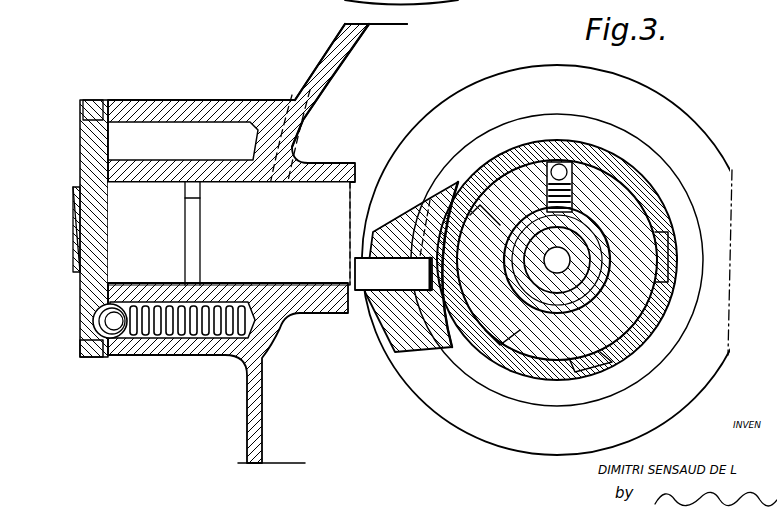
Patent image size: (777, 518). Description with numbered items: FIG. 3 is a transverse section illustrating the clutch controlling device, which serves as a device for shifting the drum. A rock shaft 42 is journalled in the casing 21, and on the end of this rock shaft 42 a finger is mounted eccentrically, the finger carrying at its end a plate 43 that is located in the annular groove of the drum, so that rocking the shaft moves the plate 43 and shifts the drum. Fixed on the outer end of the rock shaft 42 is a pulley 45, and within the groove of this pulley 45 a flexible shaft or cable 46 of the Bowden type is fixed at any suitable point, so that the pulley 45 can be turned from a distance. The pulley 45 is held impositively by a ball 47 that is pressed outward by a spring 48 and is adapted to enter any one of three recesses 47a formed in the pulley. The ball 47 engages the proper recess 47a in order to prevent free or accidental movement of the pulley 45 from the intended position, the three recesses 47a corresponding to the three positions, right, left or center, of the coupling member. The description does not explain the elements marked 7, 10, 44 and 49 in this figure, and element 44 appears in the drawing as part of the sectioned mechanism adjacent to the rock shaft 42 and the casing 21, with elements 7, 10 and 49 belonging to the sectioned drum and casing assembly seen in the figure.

The shaft bearing hub 7 is at (578, 290).
The rotor 10 is at (648, 195).
The casing 21 is at (330, 67).
The rock shaft 42 is at (415, 272).
The plate 43 is at (432, 197).
The piston 44 is at (302, 278).
The pulley 45 is at (140, 101).
The flexible shaft or cable 46 is at (88, 358).
The ball 47 is at (119, 340).
The recesses 47a is at (104, 290).
The spring 48 is at (200, 322).
The outer casing 49 is at (488, 82).